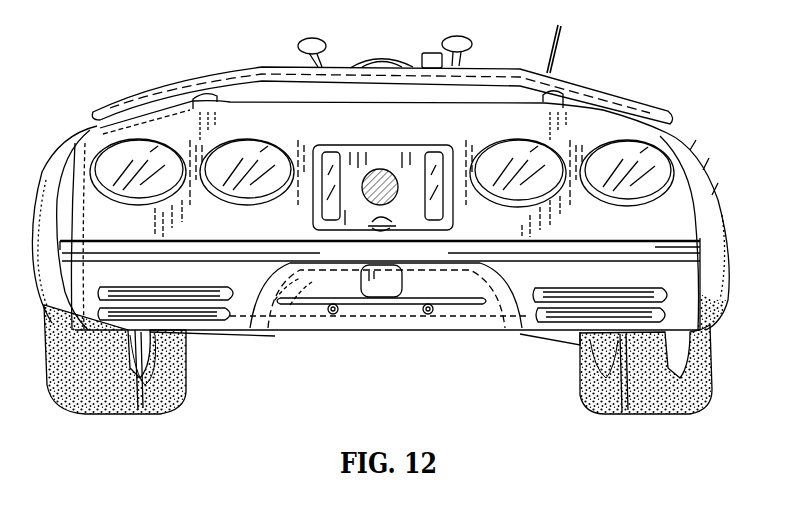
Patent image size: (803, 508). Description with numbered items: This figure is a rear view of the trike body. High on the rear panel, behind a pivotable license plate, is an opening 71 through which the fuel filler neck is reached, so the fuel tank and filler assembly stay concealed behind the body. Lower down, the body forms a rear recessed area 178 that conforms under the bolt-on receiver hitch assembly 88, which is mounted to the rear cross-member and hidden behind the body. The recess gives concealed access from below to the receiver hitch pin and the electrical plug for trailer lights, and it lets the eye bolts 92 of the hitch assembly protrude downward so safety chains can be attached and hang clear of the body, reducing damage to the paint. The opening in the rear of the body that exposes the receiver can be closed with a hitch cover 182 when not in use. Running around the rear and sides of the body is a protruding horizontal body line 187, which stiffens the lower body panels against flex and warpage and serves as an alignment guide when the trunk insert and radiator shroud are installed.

The opening 71 is at (368, 175).
The receiver hitch assembly 88 is at (334, 276).
The eye bolts 92 is at (427, 318).
The rear recessed area 178 is at (312, 312).
The hitch cover 182 is at (400, 277).
The protruding horizontal body line 187 is at (655, 245).